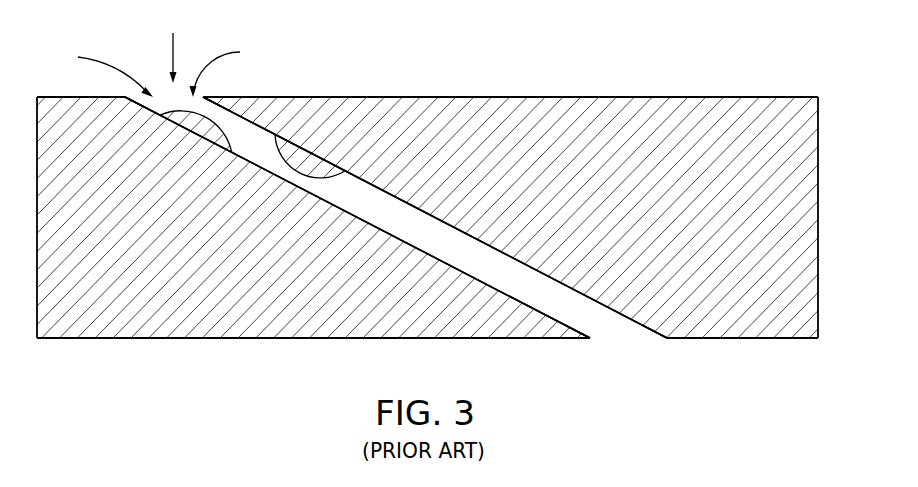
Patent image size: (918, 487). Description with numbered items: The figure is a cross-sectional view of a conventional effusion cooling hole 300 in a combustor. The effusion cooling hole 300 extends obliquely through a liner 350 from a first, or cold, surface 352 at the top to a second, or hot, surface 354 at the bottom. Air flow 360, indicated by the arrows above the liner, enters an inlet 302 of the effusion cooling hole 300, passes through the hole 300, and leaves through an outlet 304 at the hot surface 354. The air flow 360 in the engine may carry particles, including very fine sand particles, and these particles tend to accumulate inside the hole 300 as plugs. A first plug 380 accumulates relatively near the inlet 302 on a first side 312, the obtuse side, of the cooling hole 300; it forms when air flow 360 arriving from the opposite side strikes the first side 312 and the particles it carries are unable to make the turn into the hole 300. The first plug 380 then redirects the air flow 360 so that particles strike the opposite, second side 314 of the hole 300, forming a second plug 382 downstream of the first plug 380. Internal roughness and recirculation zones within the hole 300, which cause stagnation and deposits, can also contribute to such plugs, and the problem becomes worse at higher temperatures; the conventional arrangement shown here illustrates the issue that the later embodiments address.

The effusion cooling hole 300 is at (340, 222).
The inlet 302 is at (165, 88).
The outlet 304 is at (608, 328).
The first side 312 is at (277, 182).
The second side 314 is at (407, 200).
The liner 350 is at (553, 100).
The first surface 352 is at (348, 97).
The second surface 354 is at (728, 340).
The air flow 360 is at (95, 58).
The first plug 380 is at (182, 137).
The second plug 382 is at (318, 152).